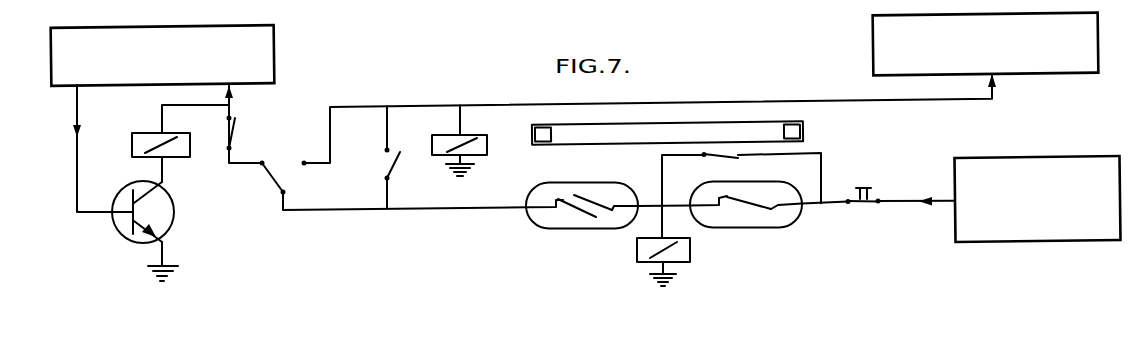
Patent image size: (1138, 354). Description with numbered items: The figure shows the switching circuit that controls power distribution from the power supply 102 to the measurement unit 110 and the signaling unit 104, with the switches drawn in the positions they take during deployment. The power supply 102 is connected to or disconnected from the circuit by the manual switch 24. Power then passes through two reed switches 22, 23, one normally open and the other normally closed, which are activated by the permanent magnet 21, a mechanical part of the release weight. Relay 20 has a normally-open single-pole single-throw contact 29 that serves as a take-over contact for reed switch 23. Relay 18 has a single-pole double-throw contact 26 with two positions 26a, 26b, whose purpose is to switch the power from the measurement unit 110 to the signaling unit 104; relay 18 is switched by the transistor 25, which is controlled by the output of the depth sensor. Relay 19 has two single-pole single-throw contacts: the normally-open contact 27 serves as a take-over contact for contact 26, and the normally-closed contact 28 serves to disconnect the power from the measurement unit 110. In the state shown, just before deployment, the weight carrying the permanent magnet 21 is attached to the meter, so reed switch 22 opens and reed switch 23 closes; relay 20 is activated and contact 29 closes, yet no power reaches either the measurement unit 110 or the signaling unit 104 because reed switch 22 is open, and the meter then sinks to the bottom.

The measurement unit 110 is at (274, 50).
The relay 18 is at (141, 132).
The transistor 25 is at (127, 242).
The contact 28 is at (237, 131).
The contact 26 is at (279, 196).
The position of contact 26 26a is at (259, 168).
The position of contact 26 26b is at (305, 166).
The contact 27 is at (390, 181).
The relay 19 is at (479, 136).
The permanent magnet 21 is at (565, 147).
The reed switch 22 is at (531, 226).
The contact 29 is at (739, 158).
The reed switch 23 is at (797, 227).
The relay 20 is at (691, 252).
The manual switch 24 is at (879, 198).
The power supply 102 is at (1045, 157).
The signaling unit 104 is at (873, 38).